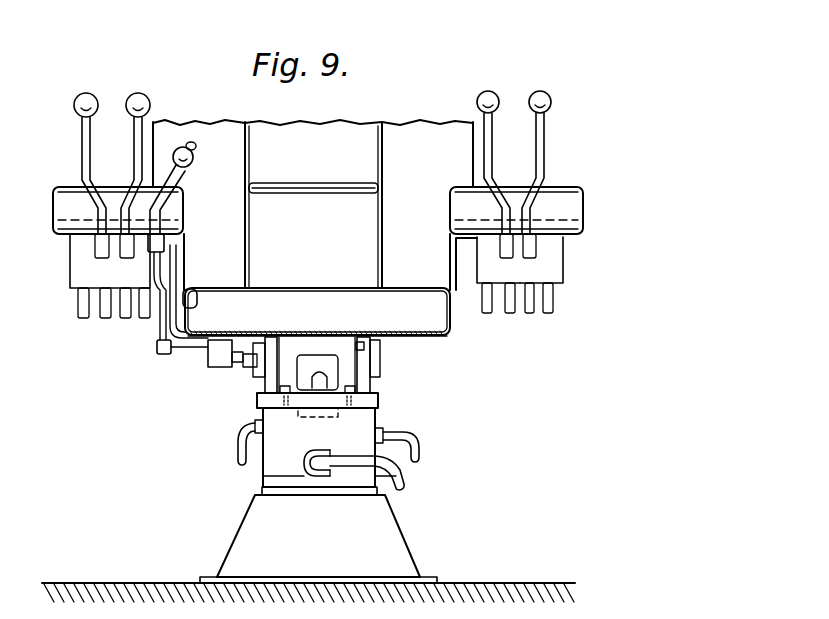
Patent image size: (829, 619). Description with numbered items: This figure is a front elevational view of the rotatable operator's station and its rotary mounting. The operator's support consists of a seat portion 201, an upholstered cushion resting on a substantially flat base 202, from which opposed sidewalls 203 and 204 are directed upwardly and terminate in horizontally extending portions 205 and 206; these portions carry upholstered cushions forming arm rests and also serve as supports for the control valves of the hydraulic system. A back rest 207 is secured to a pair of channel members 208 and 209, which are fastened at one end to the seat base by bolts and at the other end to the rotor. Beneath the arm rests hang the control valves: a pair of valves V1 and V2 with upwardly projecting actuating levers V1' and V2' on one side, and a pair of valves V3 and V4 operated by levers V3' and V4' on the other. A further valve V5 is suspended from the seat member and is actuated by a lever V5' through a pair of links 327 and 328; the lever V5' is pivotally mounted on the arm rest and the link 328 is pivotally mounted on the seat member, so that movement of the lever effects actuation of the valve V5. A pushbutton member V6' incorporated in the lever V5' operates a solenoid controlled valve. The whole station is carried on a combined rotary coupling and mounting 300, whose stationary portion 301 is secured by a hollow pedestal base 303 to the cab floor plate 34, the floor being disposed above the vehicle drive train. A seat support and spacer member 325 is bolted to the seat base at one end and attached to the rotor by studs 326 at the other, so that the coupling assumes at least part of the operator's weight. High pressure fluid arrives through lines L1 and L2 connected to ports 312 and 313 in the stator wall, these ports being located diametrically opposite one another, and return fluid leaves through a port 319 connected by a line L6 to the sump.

The channel member 209 is at (213, 132).
The back rest 207 is at (305, 132).
The channel member 208 is at (420, 127).
The actuating lever V4' is at (90, 144).
The actuating lever V3' is at (143, 144).
The pushbutton member V6' is at (214, 156).
The actuating lever V5' is at (196, 190).
The actuating lever V2' is at (490, 145).
The actuating lever V1' is at (543, 145).
The arm rest 205 is at (63, 236).
The arm rest 206 is at (570, 236).
The valve V4 is at (94, 317).
The valve V3 is at (131, 317).
The valve V2 is at (491, 302).
The valve V1 is at (533, 302).
The valve V5 is at (202, 322).
The sidewall 203 is at (186, 262).
The sidewall 204 is at (450, 256).
The seat portion 201 is at (390, 298).
The base 202 is at (427, 338).
The link 327 is at (188, 300).
The link 328 is at (223, 340).
The stud 326 is at (287, 386).
The seat support and spacer member 325 is at (364, 349).
The rotary coupling 300 is at (368, 418).
The port 312 is at (254, 422).
The port 313 is at (384, 433).
The line L1 is at (237, 451).
The line L2 is at (422, 452).
The line L6 is at (405, 487).
The port 319 is at (303, 469).
The stationary portion 301 is at (373, 481).
The pedestal base 303 is at (244, 547).
The floor plate 34 is at (488, 582).